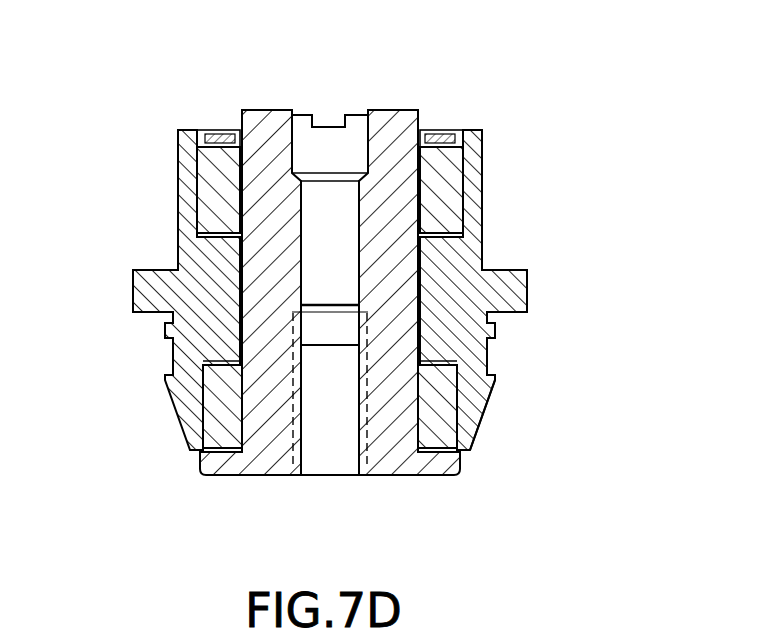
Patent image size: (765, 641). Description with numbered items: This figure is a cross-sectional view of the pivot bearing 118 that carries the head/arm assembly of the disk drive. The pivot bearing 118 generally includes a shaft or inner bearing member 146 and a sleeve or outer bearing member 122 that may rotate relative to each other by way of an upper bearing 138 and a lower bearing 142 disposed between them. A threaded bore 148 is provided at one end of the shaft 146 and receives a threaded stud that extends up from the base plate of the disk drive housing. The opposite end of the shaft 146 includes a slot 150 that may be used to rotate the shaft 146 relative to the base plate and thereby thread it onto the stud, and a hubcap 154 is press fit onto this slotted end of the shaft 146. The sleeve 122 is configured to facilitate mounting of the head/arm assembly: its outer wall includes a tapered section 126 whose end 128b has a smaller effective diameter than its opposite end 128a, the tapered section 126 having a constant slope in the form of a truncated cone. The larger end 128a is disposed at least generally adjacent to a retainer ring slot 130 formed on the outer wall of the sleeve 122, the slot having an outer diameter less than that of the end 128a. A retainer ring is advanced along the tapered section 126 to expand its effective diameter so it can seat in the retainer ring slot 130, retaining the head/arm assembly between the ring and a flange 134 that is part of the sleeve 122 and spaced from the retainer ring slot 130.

The pivot bearing 118 is at (371, 264).
The sleeve or outer bearing member 122 is at (484, 250).
The tapered section 126 is at (487, 412).
The end of tapered section 128a is at (495, 378).
The end of tapered section 128b is at (473, 443).
The retainer ring slot 130 is at (487, 347).
The flange 134 is at (133, 285).
The upper bearing 138 is at (445, 168).
The lower bearing 142 is at (208, 405).
The shaft or inner bearing member 146 is at (397, 108).
The threaded bore 148 is at (302, 457).
The slot 150 is at (330, 118).
The hubcap 154 is at (222, 129).